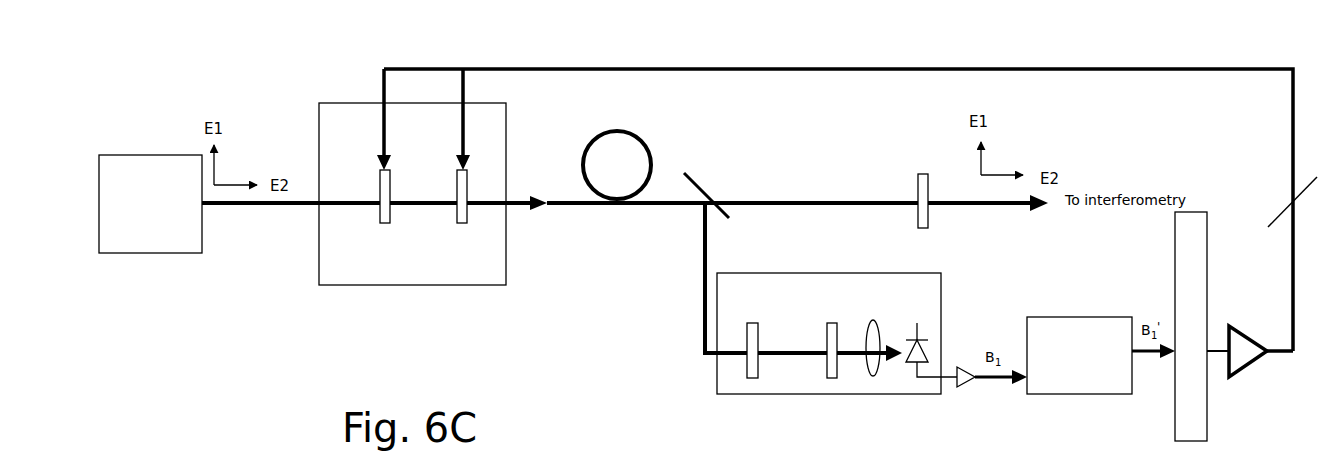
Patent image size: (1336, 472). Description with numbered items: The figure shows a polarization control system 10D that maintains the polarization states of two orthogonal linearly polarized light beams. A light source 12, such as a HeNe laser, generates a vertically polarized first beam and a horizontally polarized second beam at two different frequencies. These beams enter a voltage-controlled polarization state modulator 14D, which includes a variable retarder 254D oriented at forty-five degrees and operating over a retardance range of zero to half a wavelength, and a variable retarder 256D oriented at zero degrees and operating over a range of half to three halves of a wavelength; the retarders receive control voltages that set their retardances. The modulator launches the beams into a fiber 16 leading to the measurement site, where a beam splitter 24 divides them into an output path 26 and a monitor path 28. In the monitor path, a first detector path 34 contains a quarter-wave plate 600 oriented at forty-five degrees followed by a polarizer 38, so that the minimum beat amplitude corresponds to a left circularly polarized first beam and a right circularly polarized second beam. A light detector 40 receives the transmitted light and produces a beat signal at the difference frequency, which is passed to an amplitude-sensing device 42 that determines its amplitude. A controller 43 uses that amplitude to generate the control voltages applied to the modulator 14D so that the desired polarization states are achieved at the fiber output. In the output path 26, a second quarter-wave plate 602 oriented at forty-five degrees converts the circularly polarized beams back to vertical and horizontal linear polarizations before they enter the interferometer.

The system 10D is at (138, 80).
The light source 12 is at (162, 155).
The polarization state modulator 14D is at (394, 174).
The fiber 16 is at (609, 135).
The beam splitter 24 is at (717, 180).
The output path 26 is at (808, 198).
The monitor path 28 is at (700, 302).
The first detector path 34 is at (851, 326).
The polarizer 38 is at (834, 380).
The light detector 40 is at (936, 318).
The amplitude-sensing device 42 is at (1092, 322).
The controller 43 is at (1182, 298).
The variable retarder 254D is at (387, 226).
The variable retarder 256D is at (463, 226).
The quarter-wave plate 600 is at (754, 380).
The second quarter-wave plate 602 is at (930, 210).